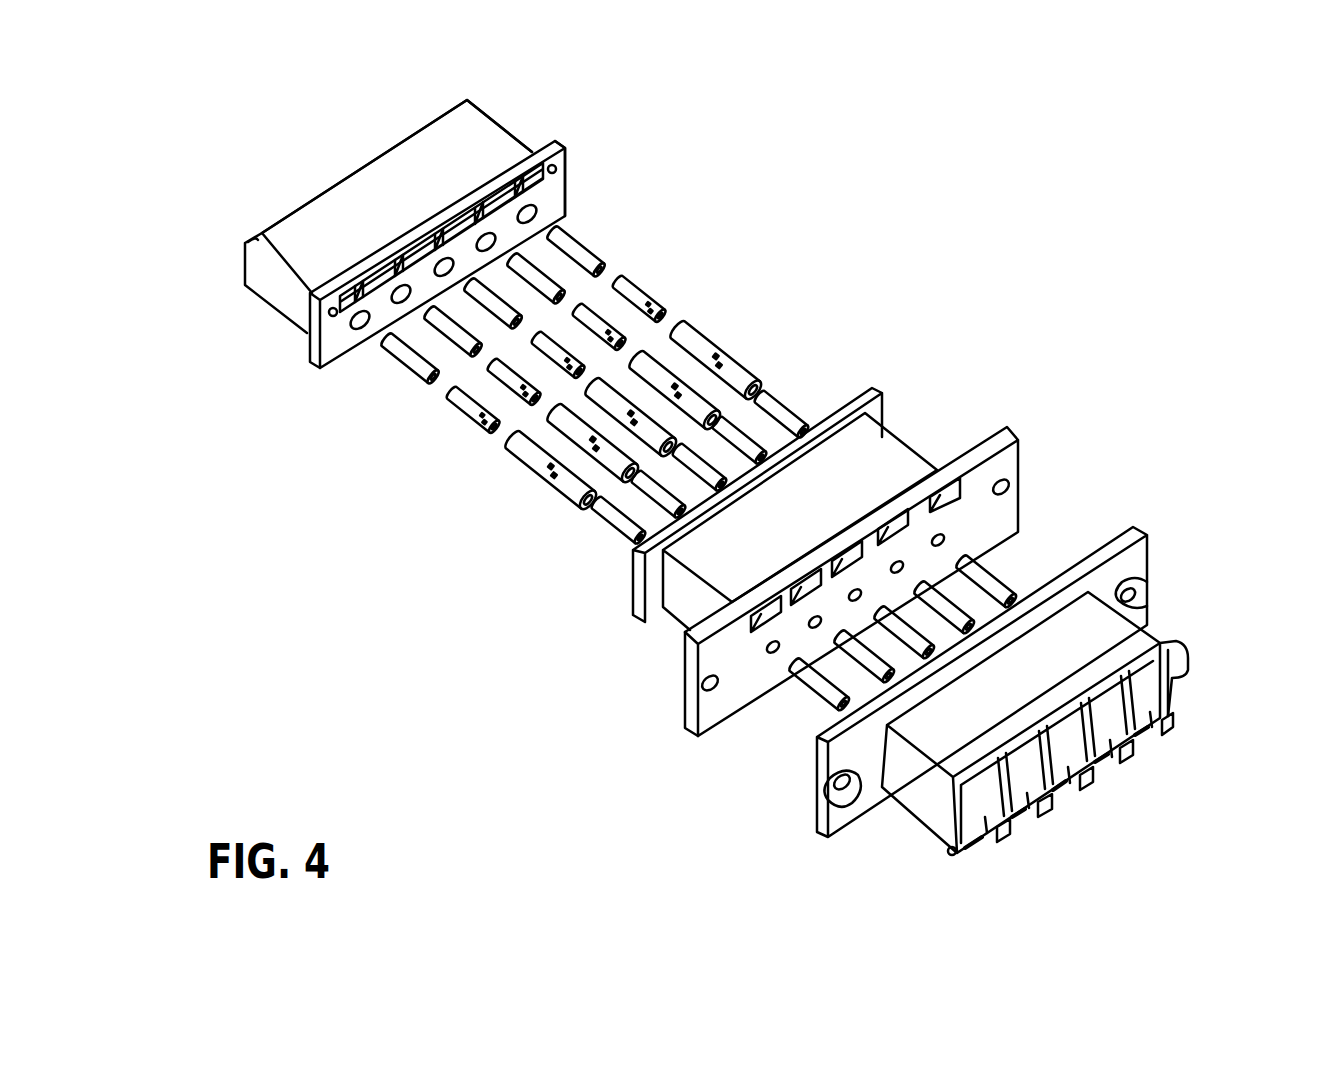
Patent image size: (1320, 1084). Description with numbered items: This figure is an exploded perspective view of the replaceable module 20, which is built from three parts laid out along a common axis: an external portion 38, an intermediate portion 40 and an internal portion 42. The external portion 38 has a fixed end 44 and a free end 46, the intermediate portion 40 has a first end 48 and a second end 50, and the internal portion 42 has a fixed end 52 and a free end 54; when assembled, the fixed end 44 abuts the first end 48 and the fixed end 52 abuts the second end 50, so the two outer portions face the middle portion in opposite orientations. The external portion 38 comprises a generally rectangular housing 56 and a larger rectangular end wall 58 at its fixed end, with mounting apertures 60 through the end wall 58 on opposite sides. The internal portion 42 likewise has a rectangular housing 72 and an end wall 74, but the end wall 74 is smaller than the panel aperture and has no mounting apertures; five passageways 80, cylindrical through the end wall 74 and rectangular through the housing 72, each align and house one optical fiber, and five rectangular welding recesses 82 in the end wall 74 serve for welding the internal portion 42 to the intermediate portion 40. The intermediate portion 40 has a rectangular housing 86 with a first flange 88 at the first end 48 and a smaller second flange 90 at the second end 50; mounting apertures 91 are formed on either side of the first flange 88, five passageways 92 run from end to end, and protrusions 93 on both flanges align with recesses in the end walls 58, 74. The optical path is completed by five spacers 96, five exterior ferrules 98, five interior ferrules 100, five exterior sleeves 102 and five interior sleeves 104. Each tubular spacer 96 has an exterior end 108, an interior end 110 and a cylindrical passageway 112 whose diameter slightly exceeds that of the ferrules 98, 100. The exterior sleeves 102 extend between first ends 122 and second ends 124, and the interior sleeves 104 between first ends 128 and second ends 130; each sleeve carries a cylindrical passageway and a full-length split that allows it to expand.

The replaceable module 20 is at (700, 502).
The external portion 38 is at (986, 688).
The intermediate portion 40 is at (805, 566).
The internal portion 42 is at (407, 260).
The fixed end 44 is at (986, 657).
The free end 46 is at (1049, 785).
The first end 48 is at (672, 718).
The second end 50 is at (821, 566).
The fixed end 52 is at (470, 275).
The free end 54 is at (367, 208).
The housing 56 is at (1032, 756).
The end wall 58 is at (1030, 675).
The mounting apertures 60 is at (986, 717).
The housing 72 is at (420, 158).
The end wall 74 is at (606, 165).
The passageways 80 is at (497, 285).
The welding recesses 82 is at (441, 223).
The housing 86 is at (809, 507).
The first flange 88 is at (853, 590).
The second flange 90 is at (805, 475).
The mounting apertures 91 is at (854, 579).
The passageways 92 is at (846, 554).
The protrusions 93 is at (848, 585).
The spacers 96 is at (683, 410).
The exterior ferrules 98 is at (725, 462).
The interior ferrules 100 is at (581, 369).
The exterior sleeves 102 is at (934, 648).
The interior sleeves 104 is at (573, 325).
The exterior end 108 is at (770, 354).
The interior end 110 is at (770, 339).
The passageway 112 is at (755, 360).
The first ends 122 is at (787, 729).
The second ends 124 is at (786, 729).
The first ends 128 is at (668, 237).
The second ends 130 is at (668, 237).